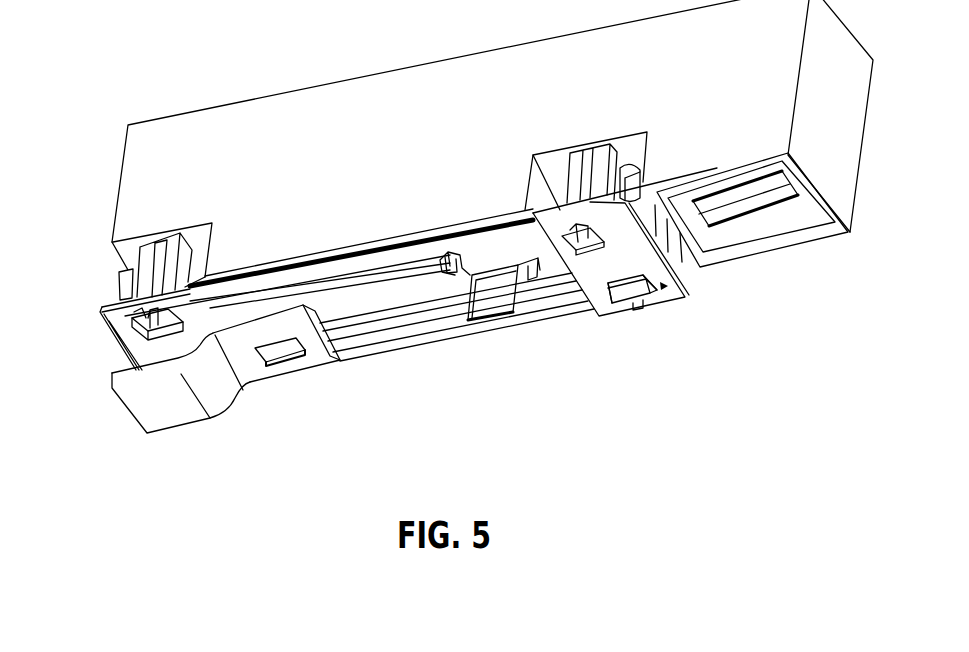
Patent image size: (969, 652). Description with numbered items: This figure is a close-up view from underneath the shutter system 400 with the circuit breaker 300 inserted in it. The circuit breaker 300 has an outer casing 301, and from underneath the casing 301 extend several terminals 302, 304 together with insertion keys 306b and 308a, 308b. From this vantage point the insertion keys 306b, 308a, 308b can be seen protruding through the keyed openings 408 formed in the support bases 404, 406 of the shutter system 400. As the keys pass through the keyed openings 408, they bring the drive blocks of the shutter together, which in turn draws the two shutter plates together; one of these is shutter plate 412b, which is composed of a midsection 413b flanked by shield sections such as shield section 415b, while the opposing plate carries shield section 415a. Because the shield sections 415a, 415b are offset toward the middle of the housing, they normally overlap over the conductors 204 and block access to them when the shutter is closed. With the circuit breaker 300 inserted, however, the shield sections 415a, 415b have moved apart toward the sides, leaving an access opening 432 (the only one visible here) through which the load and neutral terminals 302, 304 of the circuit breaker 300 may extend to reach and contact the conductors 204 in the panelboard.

The circuit breaker 300 is at (213, 44).
The outer casing 301 is at (137, 182).
The insertion key 308b is at (557, 215).
The keyed openings 408 is at (137, 315).
The support base 406 is at (683, 277).
The support base 404 is at (127, 318).
The insertion key 306b is at (132, 360).
The conductors 204 is at (147, 399).
The terminal 302 is at (277, 362).
The shutter plate 412b is at (417, 304).
The midsection 413b is at (358, 322).
The shutter system 400 is at (408, 370).
The shield section 415a is at (457, 312).
The terminal 304 is at (488, 322).
The shield section 415b is at (530, 315).
The access opening 432 is at (540, 283).
The insertion key 308a is at (633, 292).